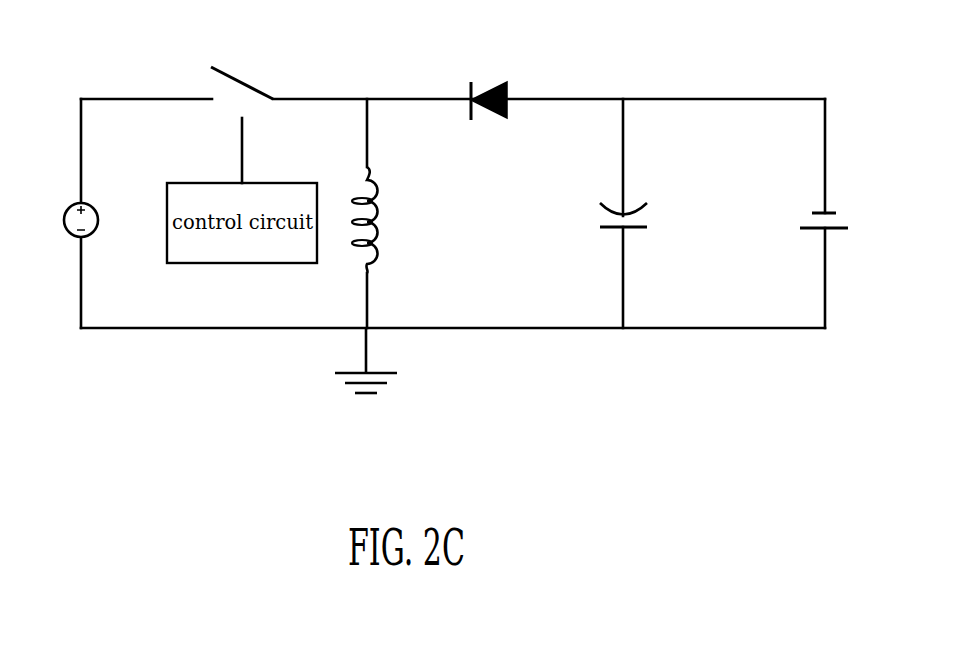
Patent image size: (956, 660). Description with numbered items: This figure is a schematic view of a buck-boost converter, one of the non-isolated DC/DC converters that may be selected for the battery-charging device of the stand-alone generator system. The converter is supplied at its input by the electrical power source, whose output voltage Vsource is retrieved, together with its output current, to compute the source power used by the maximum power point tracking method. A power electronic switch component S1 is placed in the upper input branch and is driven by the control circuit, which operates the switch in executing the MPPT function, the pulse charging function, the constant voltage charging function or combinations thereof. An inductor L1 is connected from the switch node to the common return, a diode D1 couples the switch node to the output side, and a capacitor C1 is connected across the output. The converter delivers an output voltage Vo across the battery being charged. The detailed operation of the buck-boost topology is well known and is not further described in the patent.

The switch S1 is at (242, 61).
The output voltage of the electrical power source Vsource is at (113, 236).
The inductor L1 is at (391, 220).
The diode D1 is at (493, 123).
The capacitor C1 is at (600, 215).
The output voltage / load battery Vo is at (797, 208).